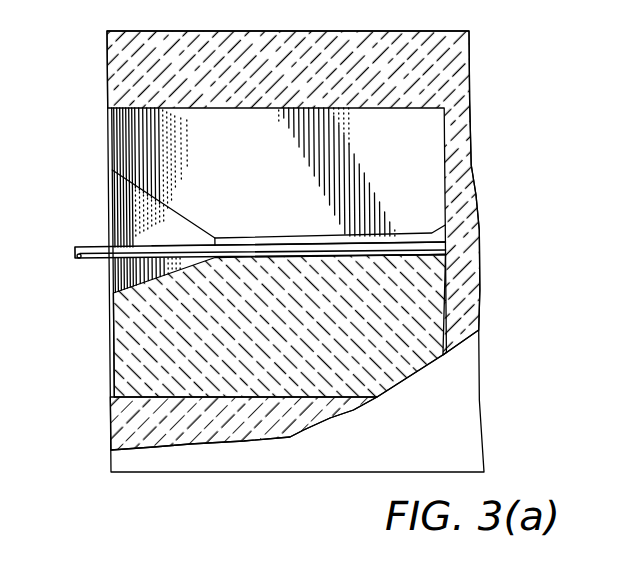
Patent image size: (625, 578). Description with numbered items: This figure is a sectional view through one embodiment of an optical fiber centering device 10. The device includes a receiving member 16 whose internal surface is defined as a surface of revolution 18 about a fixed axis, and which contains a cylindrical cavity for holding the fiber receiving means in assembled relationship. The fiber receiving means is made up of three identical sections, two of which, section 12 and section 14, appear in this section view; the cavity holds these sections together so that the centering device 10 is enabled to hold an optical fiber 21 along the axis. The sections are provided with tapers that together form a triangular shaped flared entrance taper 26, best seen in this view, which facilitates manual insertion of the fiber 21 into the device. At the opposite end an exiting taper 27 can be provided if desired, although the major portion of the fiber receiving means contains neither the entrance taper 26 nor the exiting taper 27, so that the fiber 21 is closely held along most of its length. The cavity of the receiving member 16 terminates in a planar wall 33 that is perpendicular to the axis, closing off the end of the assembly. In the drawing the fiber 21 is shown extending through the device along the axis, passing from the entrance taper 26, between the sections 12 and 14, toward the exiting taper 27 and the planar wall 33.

The optical fiber centering device 10 is at (521, 42).
The section 12 is at (122, 163).
The section 14 is at (117, 351).
The receiving member 16 is at (112, 60).
The surface of revolution 18 is at (106, 112).
The optical fiber 21 is at (93, 262).
The flared entrance taper 26 is at (130, 205).
The exiting taper 27 is at (438, 236).
The planar wall 33 is at (430, 258).